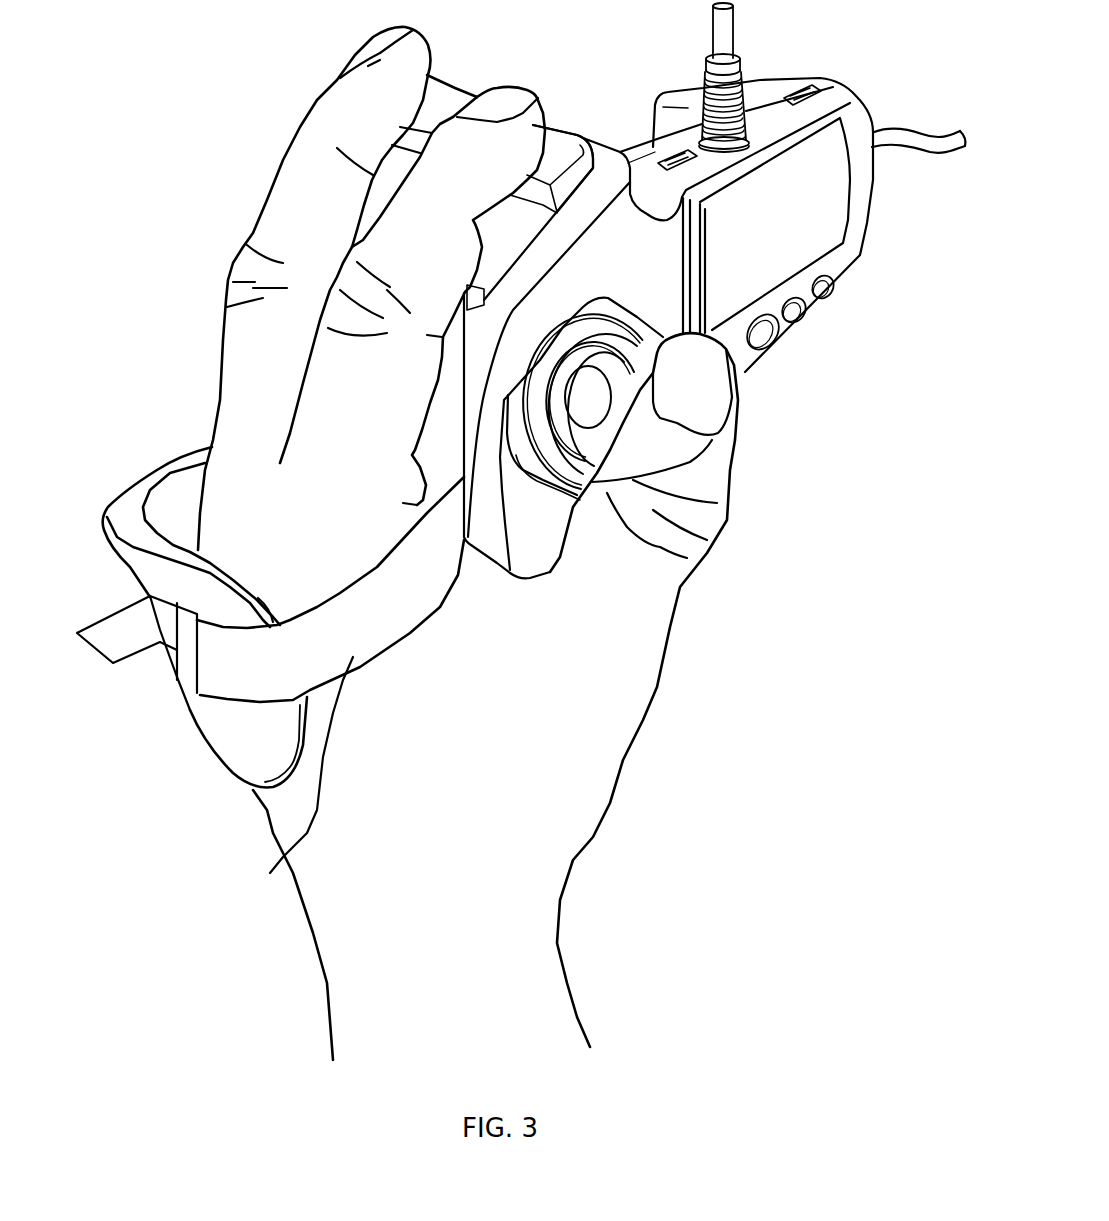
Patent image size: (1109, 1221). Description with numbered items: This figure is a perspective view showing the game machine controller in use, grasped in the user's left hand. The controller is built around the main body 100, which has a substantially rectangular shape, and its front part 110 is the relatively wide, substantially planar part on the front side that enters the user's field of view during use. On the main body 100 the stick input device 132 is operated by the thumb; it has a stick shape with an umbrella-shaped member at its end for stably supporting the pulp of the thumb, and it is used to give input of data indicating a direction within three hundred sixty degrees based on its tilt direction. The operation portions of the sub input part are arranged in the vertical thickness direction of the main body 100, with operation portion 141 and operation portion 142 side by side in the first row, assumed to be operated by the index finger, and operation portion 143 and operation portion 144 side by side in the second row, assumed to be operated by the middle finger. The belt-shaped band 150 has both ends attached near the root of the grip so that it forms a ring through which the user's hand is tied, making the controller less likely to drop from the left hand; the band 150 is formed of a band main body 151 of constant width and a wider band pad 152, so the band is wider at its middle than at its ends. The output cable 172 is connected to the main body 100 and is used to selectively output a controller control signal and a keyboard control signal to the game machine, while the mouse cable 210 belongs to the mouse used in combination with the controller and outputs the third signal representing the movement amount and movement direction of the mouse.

The main body 100 is at (714, 290).
The front part 110 is at (783, 335).
The stick input device 132 is at (594, 412).
The operation portion 141 is at (502, 233).
The operation portion 142 is at (557, 140).
The operation portion 143 is at (387, 167).
The operation portion 144 is at (438, 87).
The band 150 is at (270, 668).
The band main body 151 is at (303, 842).
The band pad 152 is at (233, 763).
The output cable 172 is at (727, 35).
The mouse cable 210 is at (918, 140).